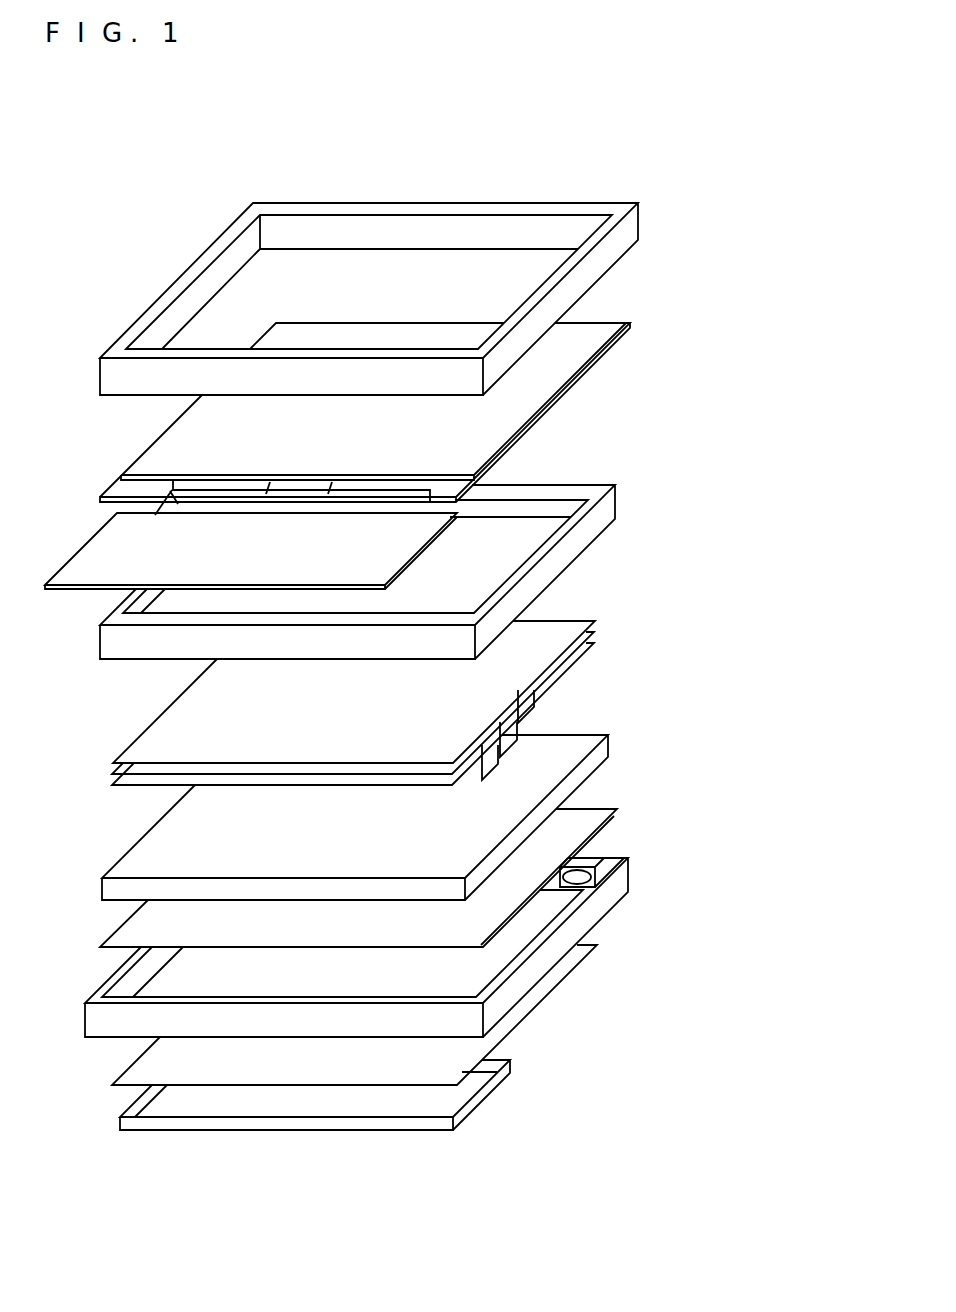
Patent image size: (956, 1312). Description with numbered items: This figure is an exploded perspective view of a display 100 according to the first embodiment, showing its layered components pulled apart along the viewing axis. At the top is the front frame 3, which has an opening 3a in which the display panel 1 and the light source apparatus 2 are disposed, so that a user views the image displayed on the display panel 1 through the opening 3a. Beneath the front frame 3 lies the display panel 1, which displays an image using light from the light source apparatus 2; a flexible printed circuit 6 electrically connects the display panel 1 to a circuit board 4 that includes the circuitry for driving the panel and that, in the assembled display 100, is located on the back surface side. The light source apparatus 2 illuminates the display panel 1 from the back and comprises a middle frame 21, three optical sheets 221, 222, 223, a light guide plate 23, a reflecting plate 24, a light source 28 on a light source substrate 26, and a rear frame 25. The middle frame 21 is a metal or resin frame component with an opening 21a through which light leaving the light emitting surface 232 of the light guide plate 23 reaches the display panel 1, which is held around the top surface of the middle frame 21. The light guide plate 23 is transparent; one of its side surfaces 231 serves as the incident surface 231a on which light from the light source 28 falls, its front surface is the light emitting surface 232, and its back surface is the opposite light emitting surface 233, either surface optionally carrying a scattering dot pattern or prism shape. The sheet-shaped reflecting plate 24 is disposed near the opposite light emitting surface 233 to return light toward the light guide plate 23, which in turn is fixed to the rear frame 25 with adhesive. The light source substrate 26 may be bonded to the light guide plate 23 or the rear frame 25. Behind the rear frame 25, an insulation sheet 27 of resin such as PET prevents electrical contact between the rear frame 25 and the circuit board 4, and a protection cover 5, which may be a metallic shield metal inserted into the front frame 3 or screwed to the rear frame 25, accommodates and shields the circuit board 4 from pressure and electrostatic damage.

The display 100 is at (80, 125).
The display panel 1 is at (607, 326).
The light source apparatus 2 is at (703, 482).
The front frame 3 is at (391, 280).
The opening 3a is at (480, 274).
The circuit board 4 is at (100, 568).
The protection cover 5 is at (485, 1094).
The flexible printed circuit 6 is at (172, 491).
The middle frame 21 is at (386, 547).
The opening 21a is at (519, 538).
The optical sheet 221 is at (598, 639).
The optical sheet 222 is at (597, 623).
The optical sheet 223 is at (560, 622).
The light guide plate 23 is at (371, 806).
The side surfaces 231 is at (577, 722).
The incident surface 231a is at (579, 745).
The light emitting surface 232 is at (150, 858).
The opposite light emitting surface 233 is at (188, 891).
The reflecting plate 24 is at (592, 813).
The rear frame 25 is at (578, 924).
The light source substrate 26 is at (578, 892).
The insulation sheet 27 is at (512, 1012).
The light source 28 is at (616, 892).